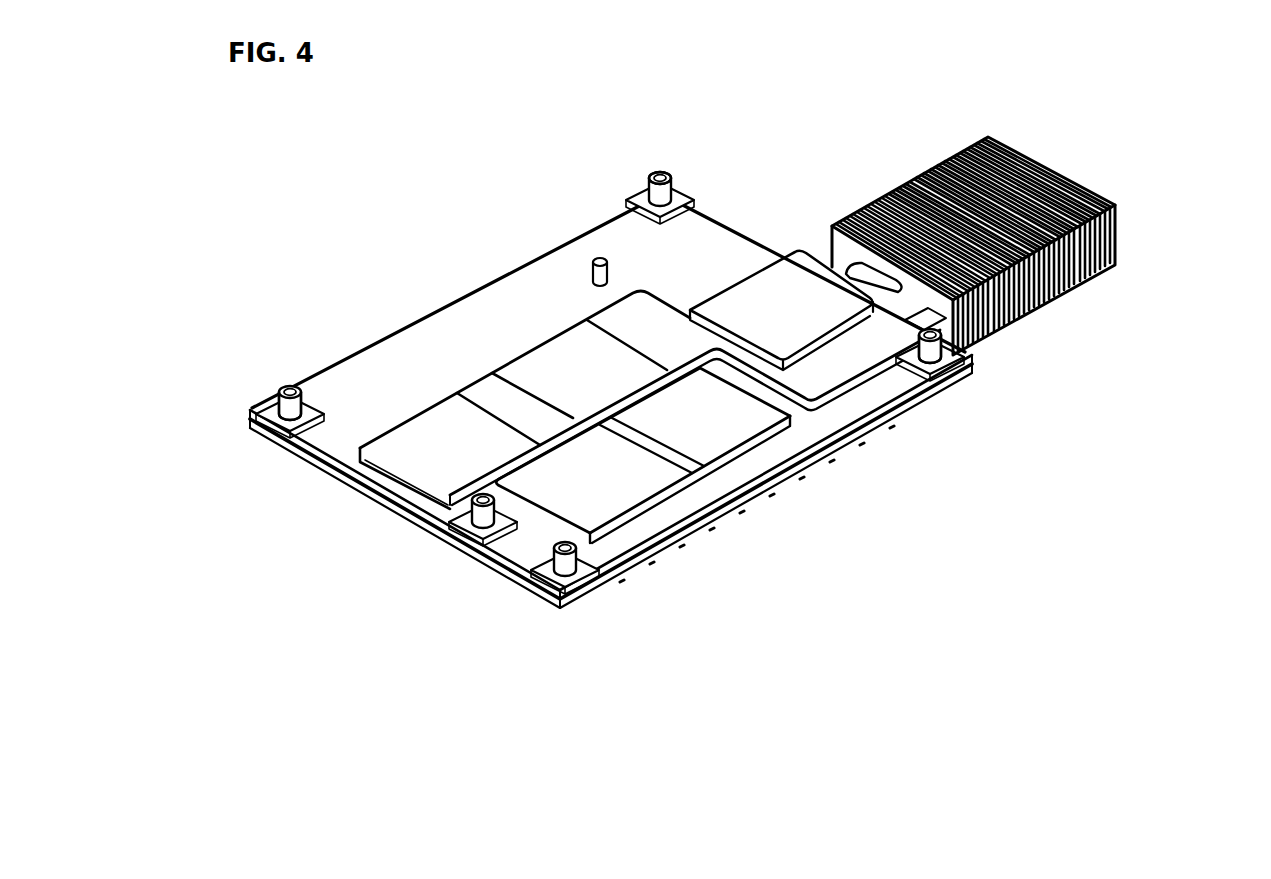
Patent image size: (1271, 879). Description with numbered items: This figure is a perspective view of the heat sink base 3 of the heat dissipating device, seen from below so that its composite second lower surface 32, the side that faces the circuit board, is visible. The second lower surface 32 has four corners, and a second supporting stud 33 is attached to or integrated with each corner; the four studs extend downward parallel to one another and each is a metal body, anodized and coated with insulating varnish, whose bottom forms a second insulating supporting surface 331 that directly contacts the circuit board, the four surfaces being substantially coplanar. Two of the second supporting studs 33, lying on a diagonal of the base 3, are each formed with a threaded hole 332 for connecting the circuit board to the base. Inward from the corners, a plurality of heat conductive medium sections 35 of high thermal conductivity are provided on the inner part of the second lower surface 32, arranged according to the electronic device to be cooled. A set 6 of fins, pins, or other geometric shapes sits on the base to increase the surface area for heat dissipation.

The heat sink base 3 is at (693, 527).
The second lower surface 32 is at (790, 443).
The second supporting stud 33 is at (668, 190).
The second insulating supporting surface 331 is at (281, 383).
The threaded hole 332 is at (652, 175).
The heat conductive medium section 35 is at (570, 352).
The set of fins 6 is at (1072, 288).